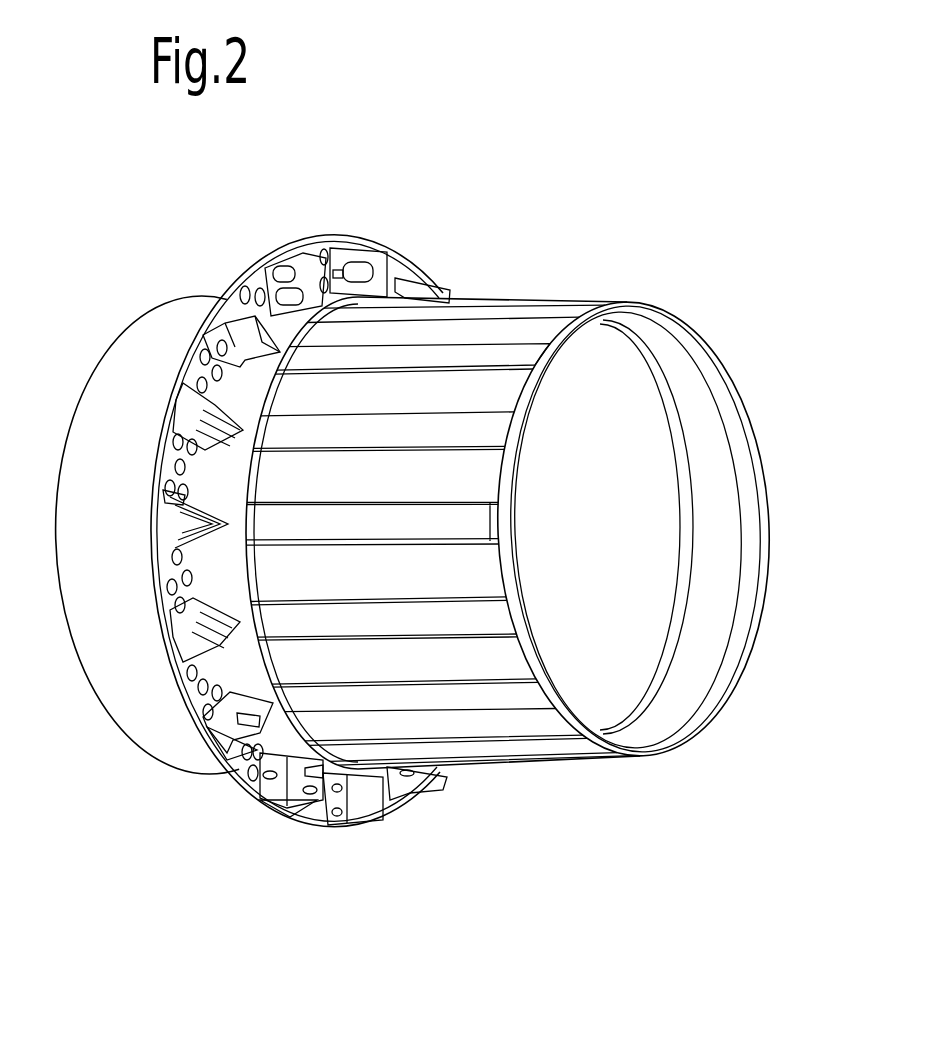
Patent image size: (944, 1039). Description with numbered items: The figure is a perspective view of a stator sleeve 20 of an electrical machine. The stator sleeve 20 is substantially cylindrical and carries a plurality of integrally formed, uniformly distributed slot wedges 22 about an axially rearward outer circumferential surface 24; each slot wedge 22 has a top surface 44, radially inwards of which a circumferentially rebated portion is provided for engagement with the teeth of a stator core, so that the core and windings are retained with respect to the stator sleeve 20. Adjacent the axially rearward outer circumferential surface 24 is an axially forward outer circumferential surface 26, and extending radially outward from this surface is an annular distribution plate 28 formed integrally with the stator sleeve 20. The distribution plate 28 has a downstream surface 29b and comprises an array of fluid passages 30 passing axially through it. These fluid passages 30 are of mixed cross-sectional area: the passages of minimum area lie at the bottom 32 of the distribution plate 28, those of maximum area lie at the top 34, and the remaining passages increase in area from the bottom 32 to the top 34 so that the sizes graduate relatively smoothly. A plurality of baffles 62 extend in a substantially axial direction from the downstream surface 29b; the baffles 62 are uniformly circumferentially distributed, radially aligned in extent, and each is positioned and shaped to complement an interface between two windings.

The stator sleeve 20 is at (440, 336).
The slot wedges 22 is at (447, 697).
The axially rearward outer circumferential surface 24 is at (483, 388).
The axially forward outer circumferential surface 26 is at (113, 387).
The distribution plate 28 is at (250, 775).
The downstream surface 29b is at (195, 698).
The fluid passages 30 is at (172, 588).
The bottom 32 is at (322, 820).
The top 34 is at (312, 247).
The top surface 44 is at (437, 527).
The baffles 62 is at (232, 292).